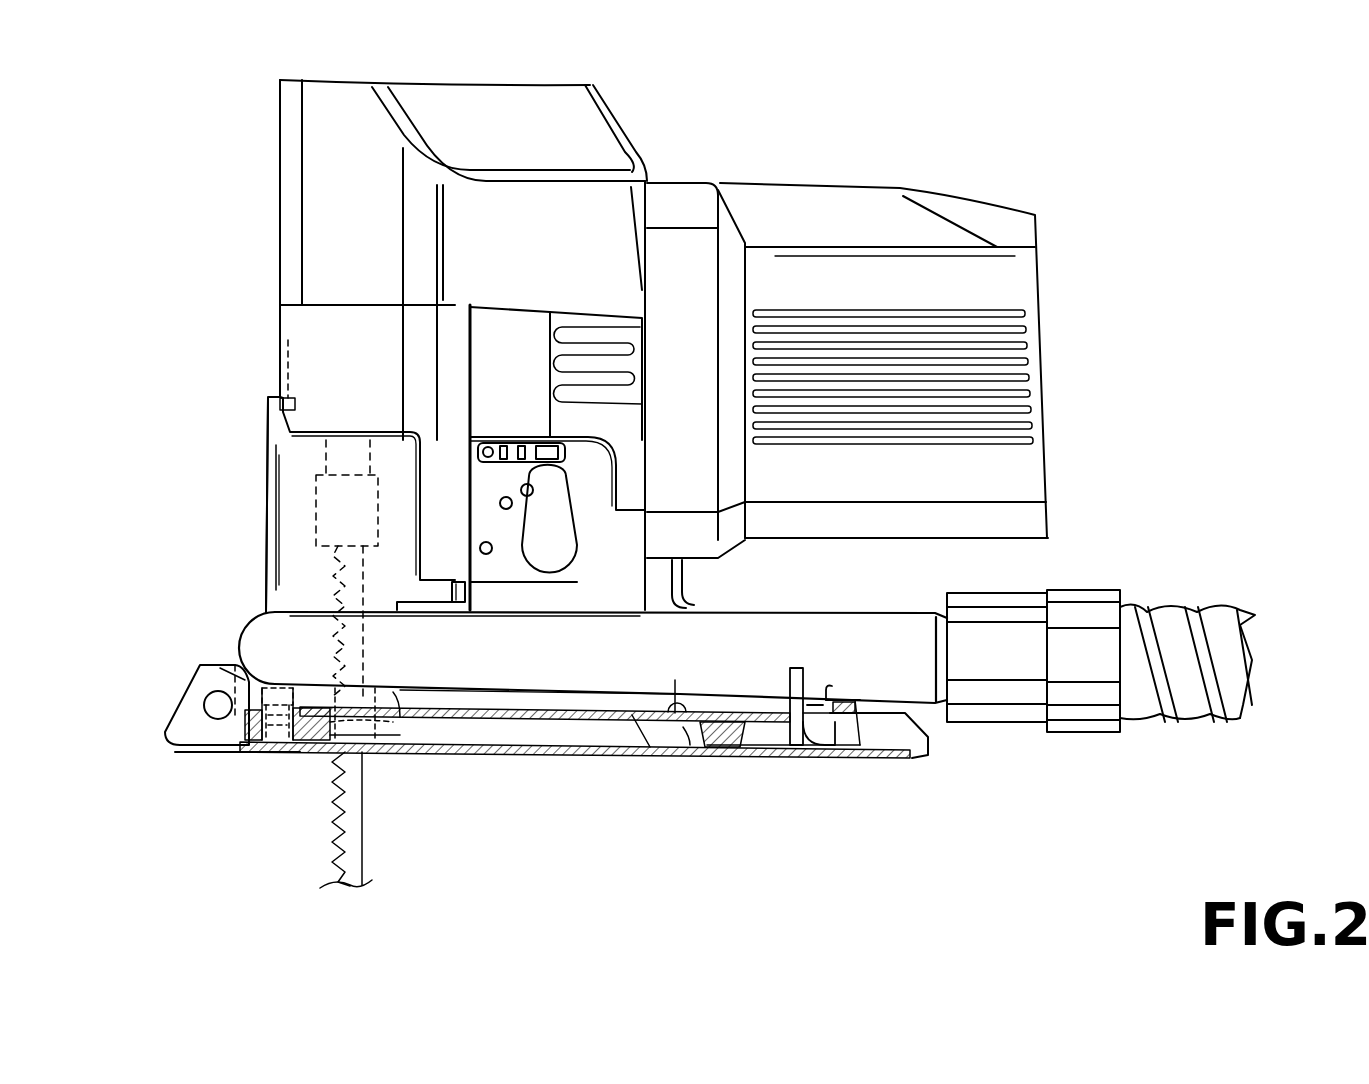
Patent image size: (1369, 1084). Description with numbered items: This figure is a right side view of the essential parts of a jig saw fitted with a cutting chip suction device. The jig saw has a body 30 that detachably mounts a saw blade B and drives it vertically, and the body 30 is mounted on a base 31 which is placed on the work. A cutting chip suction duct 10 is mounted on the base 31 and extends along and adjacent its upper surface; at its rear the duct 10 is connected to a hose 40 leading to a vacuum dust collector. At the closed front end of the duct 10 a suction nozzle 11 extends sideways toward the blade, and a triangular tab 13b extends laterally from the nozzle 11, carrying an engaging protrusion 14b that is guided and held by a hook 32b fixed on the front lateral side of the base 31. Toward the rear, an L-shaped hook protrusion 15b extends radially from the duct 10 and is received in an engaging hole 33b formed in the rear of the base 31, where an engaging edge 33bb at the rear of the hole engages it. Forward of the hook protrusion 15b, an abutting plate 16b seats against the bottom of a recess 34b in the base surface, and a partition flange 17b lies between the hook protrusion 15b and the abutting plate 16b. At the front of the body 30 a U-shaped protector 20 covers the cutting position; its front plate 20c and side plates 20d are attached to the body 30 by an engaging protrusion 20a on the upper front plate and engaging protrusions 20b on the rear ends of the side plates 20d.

The cutting chip suction duct 10 is at (795, 607).
The suction nozzle 11 is at (398, 720).
The tab 13b is at (218, 660).
The engaging protrusion 14b is at (200, 702).
The hook protrusion 15b is at (820, 750).
The abutting plate 16b is at (742, 750).
The partition flange 17b is at (803, 757).
The protector 20 is at (322, 432).
The engaging protrusion 20a is at (282, 342).
The engaging protrusion 20b is at (466, 592).
The front plate 20c is at (268, 470).
The side plate 20d is at (300, 530).
The body 30 is at (690, 178).
The base 31 is at (482, 757).
The hook 32b is at (286, 722).
The engaging hole 33b is at (795, 757).
The engaging edge 33bb is at (850, 757).
The recess 34b is at (677, 747).
The hose 40 is at (1167, 628).
The saw blade B is at (350, 858).